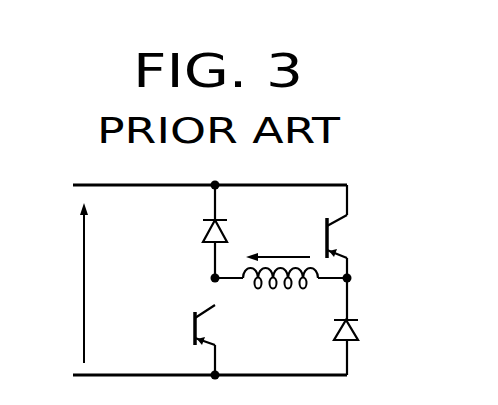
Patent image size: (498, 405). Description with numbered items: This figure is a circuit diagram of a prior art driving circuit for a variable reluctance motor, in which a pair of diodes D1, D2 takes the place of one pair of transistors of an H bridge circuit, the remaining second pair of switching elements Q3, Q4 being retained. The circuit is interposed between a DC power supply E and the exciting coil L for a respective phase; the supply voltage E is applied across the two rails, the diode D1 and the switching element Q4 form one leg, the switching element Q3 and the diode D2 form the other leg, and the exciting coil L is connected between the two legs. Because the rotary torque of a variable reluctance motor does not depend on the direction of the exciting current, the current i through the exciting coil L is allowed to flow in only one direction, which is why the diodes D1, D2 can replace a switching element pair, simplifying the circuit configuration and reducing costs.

The diode D1 is at (198, 228).
The diode D2 is at (367, 331).
The switching element Q3 is at (357, 236).
The switching element Q4 is at (184, 325).
The exciting coil L is at (282, 290).
The DC power supply E is at (73, 283).
The inductor current i is at (278, 243).